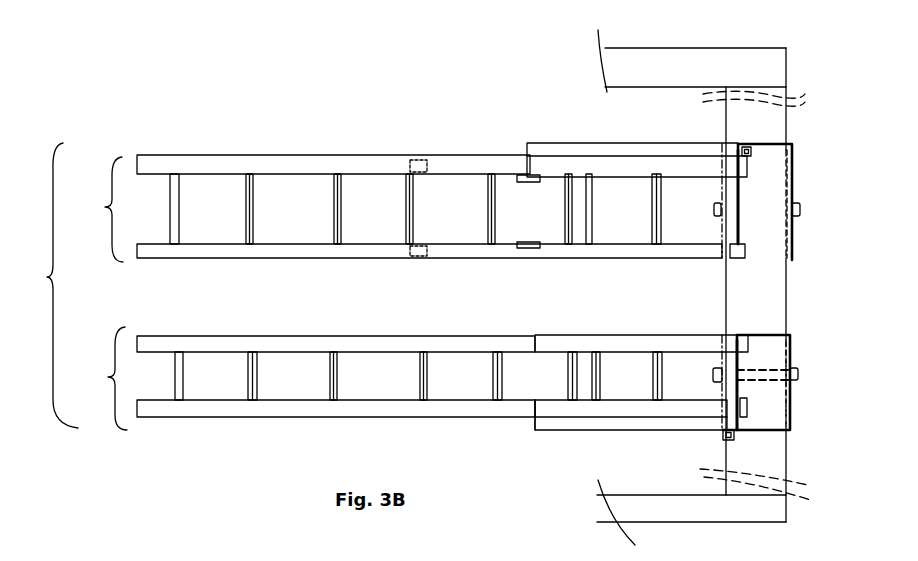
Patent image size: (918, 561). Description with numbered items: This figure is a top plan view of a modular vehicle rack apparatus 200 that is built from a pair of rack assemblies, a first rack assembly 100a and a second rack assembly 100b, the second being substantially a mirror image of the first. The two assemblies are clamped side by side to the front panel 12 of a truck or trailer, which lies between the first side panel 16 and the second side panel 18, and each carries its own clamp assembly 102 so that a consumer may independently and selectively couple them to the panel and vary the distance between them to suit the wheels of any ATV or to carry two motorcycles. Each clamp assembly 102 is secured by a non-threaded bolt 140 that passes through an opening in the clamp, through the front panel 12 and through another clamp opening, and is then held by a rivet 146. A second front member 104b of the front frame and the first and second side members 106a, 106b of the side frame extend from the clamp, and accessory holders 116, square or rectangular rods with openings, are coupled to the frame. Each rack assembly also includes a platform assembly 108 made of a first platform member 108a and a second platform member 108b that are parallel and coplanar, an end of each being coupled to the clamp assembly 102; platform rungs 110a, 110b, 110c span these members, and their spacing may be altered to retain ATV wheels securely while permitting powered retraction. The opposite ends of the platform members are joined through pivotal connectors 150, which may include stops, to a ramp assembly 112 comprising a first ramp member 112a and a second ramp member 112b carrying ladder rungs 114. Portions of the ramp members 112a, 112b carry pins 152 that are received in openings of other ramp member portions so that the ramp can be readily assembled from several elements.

The modular vehicle rack apparatus 200 is at (46, 277).
The ramp assembly 112 is at (105, 207).
The first ramp member 112a is at (301, 258).
The second ramp member 112b is at (270, 163).
The ladder rungs 114 is at (488, 222).
The first rack assembly 100a is at (428, 285).
The second rack assembly 100b is at (247, 429).
The pins 152 is at (416, 158).
The pivotal connectors 150 is at (520, 242).
The platform assembly 108 is at (683, 279).
The first platform member 108a is at (737, 255).
The second platform member 108b is at (602, 170).
The first side member 106a is at (545, 428).
The second side member 106b is at (708, 150).
The platform rung 110a is at (657, 225).
The platform rung 110b is at (590, 226).
The platform rung 110c is at (568, 226).
The accessory holders 116 is at (752, 152).
The front panel 12 is at (808, 180).
The first side panel 16 is at (692, 61).
The second side panel 18 is at (691, 512).
The clamp assembly 102 is at (757, 287).
The second front member 104b is at (740, 222).
The bolt 140 is at (714, 210).
The rivet 146 is at (796, 378).